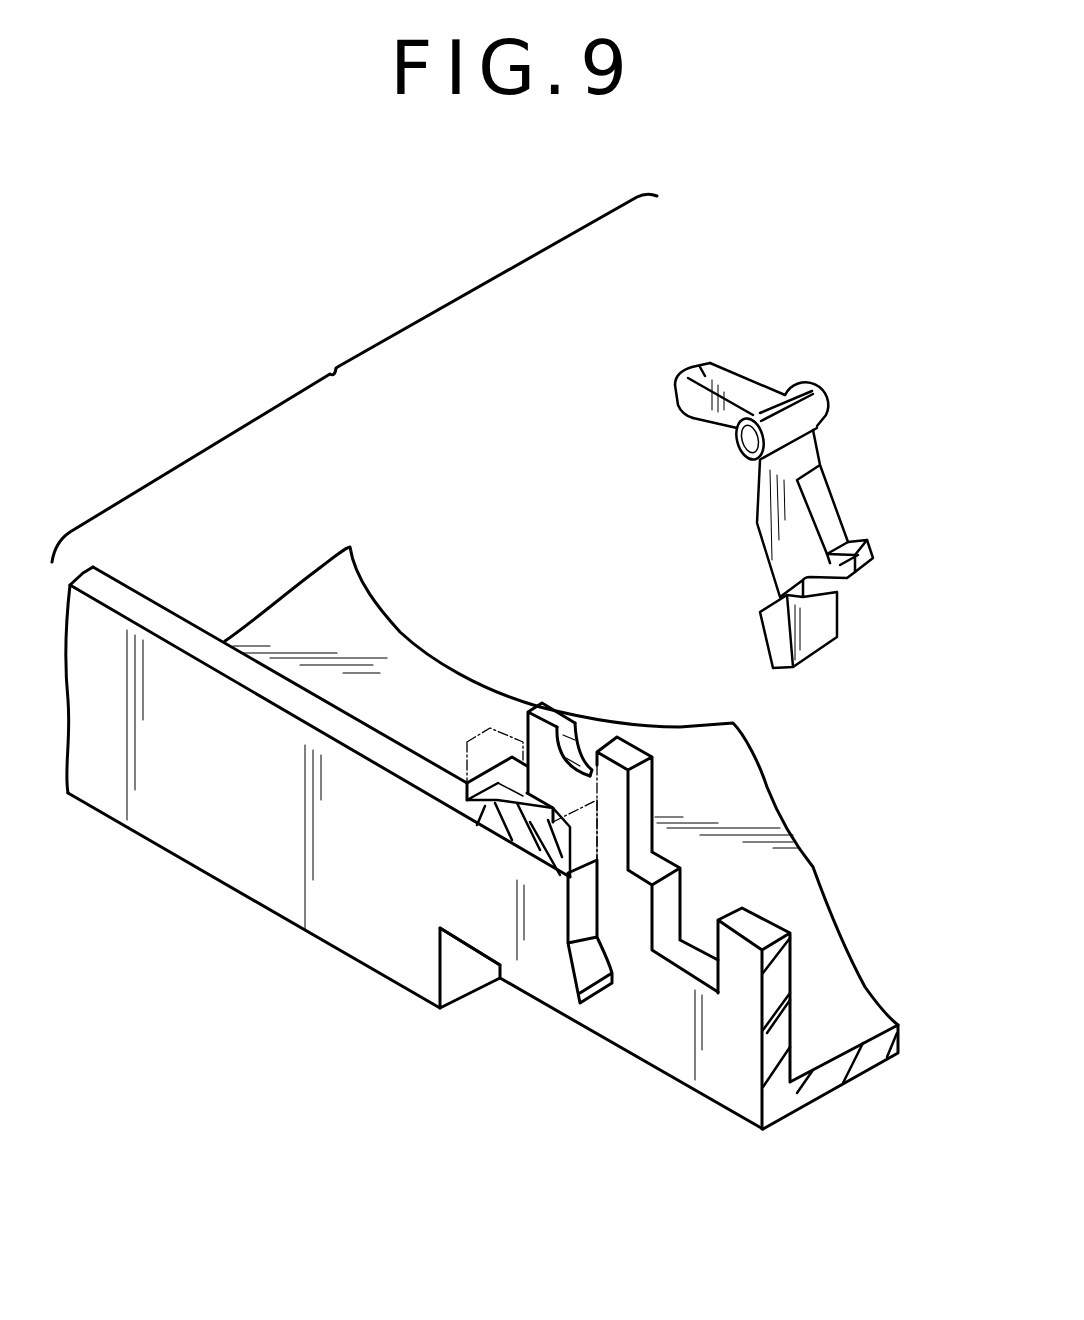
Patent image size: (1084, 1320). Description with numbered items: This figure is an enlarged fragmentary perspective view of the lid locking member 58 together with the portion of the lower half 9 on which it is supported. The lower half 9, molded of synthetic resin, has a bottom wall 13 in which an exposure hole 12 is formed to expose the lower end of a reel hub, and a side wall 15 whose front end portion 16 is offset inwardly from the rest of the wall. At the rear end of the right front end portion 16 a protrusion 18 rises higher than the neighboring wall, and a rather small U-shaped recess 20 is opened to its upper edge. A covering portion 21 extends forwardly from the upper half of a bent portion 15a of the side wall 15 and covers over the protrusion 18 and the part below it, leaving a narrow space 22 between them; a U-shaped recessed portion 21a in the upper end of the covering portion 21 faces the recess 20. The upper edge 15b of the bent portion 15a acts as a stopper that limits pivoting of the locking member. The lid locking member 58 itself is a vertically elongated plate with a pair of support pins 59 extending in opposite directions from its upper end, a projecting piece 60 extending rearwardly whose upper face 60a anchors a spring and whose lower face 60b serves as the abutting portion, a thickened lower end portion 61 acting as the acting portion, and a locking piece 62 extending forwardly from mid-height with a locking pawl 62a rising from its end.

The lower half 9 is at (148, 840).
The exposure hole 12 is at (516, 742).
The bottom wall 13 is at (561, 786).
The side wall 15 is at (414, 848).
The bent portion 15a is at (502, 720).
The upper edge 15b is at (487, 842).
The front end portion 16 is at (747, 933).
The protrusion 18 is at (560, 710).
The U-shaped recess 20 is at (570, 727).
The covering portion 21 is at (454, 998).
The U-shaped recessed portion 21a is at (492, 830).
The narrow space 22 is at (597, 890).
The lid locking member 58 is at (774, 477).
The support pin 59 is at (823, 390).
The projecting piece 60 is at (723, 362).
The upper face 60a is at (707, 362).
The lower face 60b is at (693, 413).
The lower end portion 61 is at (843, 624).
The locking piece 62 is at (873, 560).
The locking pawl 62a is at (867, 540).